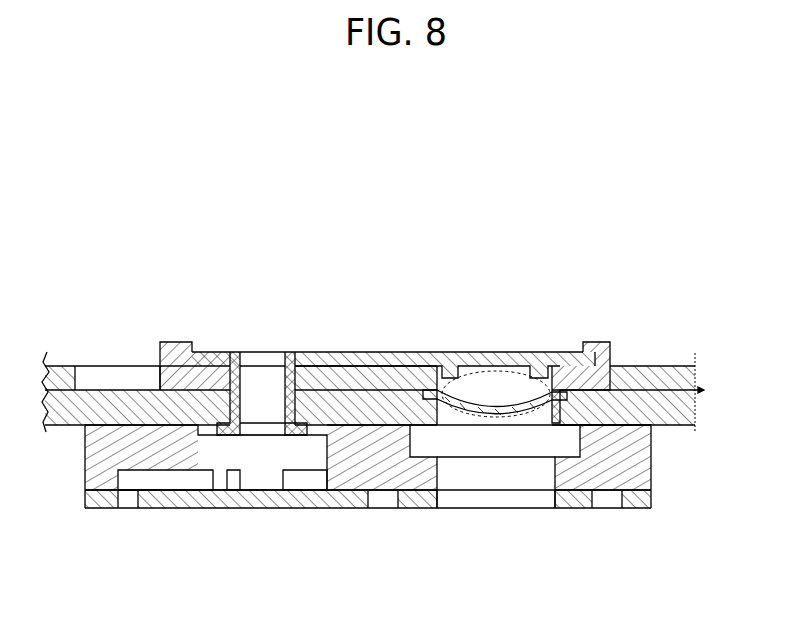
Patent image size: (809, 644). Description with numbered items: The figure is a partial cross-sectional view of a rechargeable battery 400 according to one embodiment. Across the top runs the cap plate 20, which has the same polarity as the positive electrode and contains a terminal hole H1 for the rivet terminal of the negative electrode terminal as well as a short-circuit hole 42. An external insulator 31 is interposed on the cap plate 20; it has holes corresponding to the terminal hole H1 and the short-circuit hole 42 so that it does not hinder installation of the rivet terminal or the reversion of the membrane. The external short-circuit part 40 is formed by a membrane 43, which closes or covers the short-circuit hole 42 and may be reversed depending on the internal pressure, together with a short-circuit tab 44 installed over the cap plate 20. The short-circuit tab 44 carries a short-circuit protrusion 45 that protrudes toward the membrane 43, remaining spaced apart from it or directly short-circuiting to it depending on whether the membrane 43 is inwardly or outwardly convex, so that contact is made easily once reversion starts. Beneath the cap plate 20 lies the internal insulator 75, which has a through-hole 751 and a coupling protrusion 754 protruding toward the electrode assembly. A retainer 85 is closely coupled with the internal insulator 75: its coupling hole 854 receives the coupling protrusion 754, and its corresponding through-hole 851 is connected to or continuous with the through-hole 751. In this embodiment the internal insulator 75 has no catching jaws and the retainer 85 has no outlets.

The rechargeable battery 400 is at (392, 200).
The cap plate 20 is at (663, 402).
The external insulator 31 is at (172, 342).
The terminal hole H1 is at (235, 406).
The short-circuit tab 44 is at (340, 352).
The external short-circuit part 40 is at (413, 312).
The membrane 43 is at (492, 377).
The short-circuit hole 42 is at (533, 367).
The short-circuit protrusion 45 is at (546, 366).
The internal insulator 75 is at (653, 463).
The through-hole 751 is at (493, 473).
The coupling protrusion 754 is at (377, 498).
The retainer 85 is at (653, 497).
The corresponding through-hole 851 is at (455, 498).
The coupling hole 854 is at (380, 497).